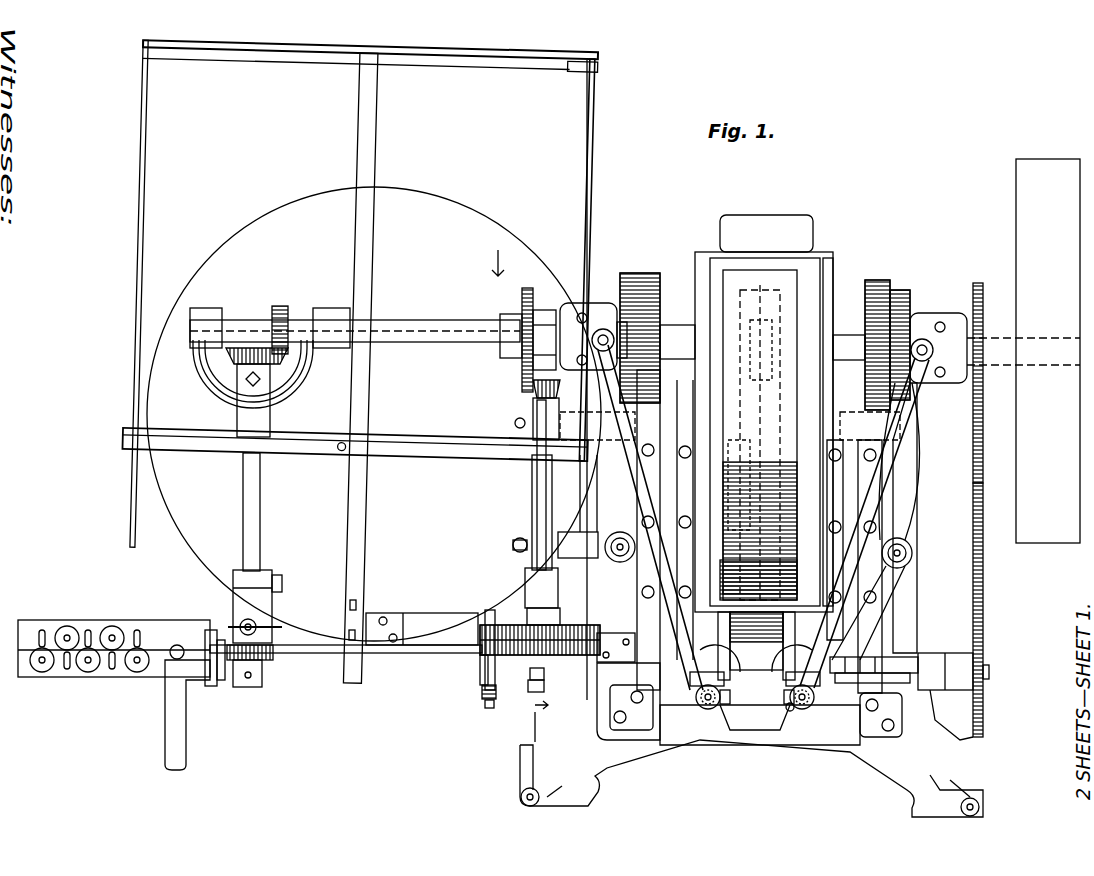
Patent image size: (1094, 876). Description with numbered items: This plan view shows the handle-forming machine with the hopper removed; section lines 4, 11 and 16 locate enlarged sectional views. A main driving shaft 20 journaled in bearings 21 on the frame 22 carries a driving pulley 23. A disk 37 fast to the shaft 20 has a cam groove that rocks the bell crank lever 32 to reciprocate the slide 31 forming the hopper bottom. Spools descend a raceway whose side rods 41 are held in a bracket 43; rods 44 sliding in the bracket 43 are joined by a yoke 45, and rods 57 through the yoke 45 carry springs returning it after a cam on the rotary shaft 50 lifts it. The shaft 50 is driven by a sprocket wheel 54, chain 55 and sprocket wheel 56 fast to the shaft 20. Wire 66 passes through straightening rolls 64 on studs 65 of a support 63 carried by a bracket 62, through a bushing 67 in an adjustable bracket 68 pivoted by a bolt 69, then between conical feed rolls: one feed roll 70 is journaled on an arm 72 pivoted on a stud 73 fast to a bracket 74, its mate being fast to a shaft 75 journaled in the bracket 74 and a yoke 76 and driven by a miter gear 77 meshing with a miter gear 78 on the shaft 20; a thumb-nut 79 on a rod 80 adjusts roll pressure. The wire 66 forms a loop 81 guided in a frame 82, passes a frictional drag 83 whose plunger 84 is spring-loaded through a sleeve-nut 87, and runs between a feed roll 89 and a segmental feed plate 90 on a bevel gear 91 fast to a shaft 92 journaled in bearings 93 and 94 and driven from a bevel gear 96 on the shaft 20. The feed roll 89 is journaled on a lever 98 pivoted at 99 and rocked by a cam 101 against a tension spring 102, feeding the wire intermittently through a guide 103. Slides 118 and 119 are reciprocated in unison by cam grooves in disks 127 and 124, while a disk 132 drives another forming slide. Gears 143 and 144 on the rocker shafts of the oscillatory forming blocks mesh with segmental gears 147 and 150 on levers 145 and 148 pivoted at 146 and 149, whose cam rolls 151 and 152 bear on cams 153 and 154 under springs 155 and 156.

The section line 4 is at (518, 489).
The section line 11 is at (757, 706).
The section line 16 is at (490, 610).
The main driving shaft 20 is at (455, 320).
The bearings 21 is at (598, 303).
The frame 22 is at (912, 584).
The driving pulley 23 is at (1016, 238).
The reciprocatory slide 31 is at (725, 558).
The bell crank lever 32 is at (758, 318).
The disk 37 is at (740, 258).
The side rods 41 is at (850, 678).
The bracket or bridge 43 is at (788, 712).
The rods 44 is at (784, 706).
The yoke 45 is at (850, 660).
The rotary shaft 50 is at (989, 668).
The sprocket wheel 54 is at (968, 720).
The chain 55 is at (983, 592).
The sprocket wheel 56 is at (983, 320).
The rods 57 is at (838, 646).
The bracket 62 is at (418, 613).
The support 63 is at (72, 678).
The straightening rolls 64 is at (67, 626).
The studs 65 is at (42, 630).
The wire 66 is at (205, 644).
The bushing 67 is at (212, 686).
The adjustable bracket 68 is at (165, 722).
The bolt 69 is at (180, 645).
The feed roll 70 is at (265, 662).
The arm 72 is at (248, 687).
The stud 73 is at (264, 572).
The bracket 74 is at (283, 584).
The shaft 75 is at (261, 500).
The yoke 76 is at (202, 388).
The miter gear 77 is at (247, 346).
The miter gear 78 is at (280, 306).
The thumb-nut 79 is at (244, 620).
The rod 80 is at (260, 627).
The loop 81 is at (452, 205).
The frame 82 is at (596, 212).
The frictional device or drag 83 is at (535, 680).
The plunger 84 is at (486, 706).
The sleeve-nut 87 is at (482, 692).
The feed roll 89 is at (480, 665).
The segmental feed plate 90 is at (480, 637).
The bevel gear 91 is at (570, 625).
The shaft 92 is at (537, 497).
The bearing 93 is at (525, 585).
The bearing 94 is at (535, 412).
The bevel gear 96 is at (530, 288).
The lever 98 is at (532, 477).
The pivot 99 is at (515, 540).
The cam 101 is at (546, 310).
The helical tension spring 102 is at (515, 424).
The guide 103 is at (585, 665).
The slide 118 is at (825, 745).
The slide 119 is at (682, 745).
The disk 124 is at (648, 273).
The disk 127 is at (875, 280).
The disk 132 is at (826, 258).
The gear 143 is at (706, 710).
The gear 144 is at (800, 712).
The lever 145 is at (650, 620).
The pivot 146 is at (620, 562).
The segmental gear 147 is at (660, 735).
The lever 148 is at (912, 530).
The pivot 149 is at (912, 553).
The segmental gear 150 is at (880, 737).
The cam roll 151 is at (586, 280).
The cam roll 152 is at (920, 338).
The cam 153 is at (625, 322).
The cam 154 is at (898, 290).
The spring 155 is at (610, 423).
The spring 156 is at (872, 426).